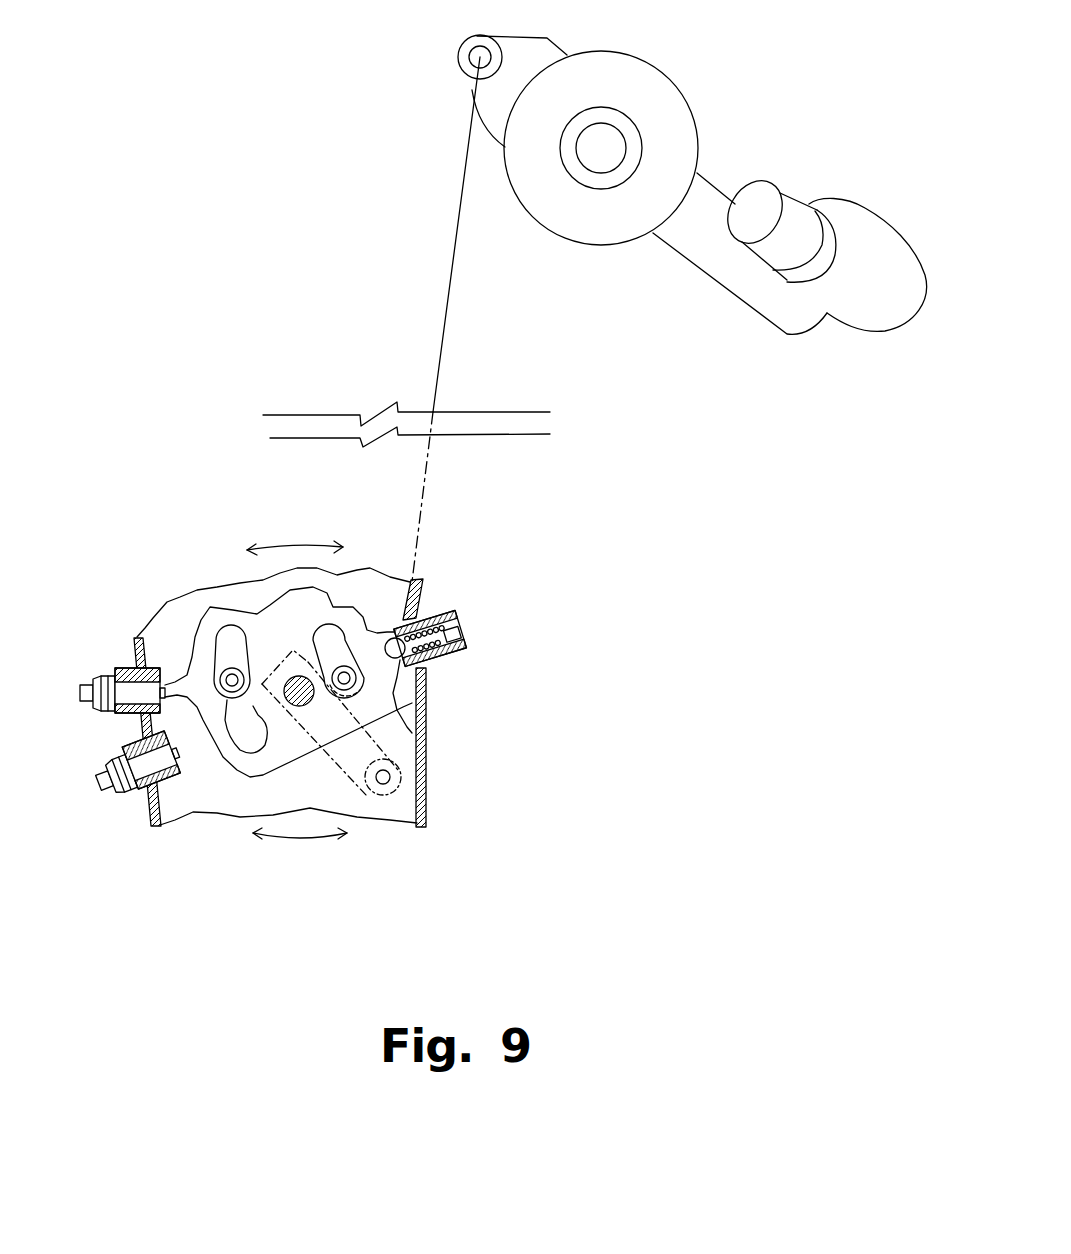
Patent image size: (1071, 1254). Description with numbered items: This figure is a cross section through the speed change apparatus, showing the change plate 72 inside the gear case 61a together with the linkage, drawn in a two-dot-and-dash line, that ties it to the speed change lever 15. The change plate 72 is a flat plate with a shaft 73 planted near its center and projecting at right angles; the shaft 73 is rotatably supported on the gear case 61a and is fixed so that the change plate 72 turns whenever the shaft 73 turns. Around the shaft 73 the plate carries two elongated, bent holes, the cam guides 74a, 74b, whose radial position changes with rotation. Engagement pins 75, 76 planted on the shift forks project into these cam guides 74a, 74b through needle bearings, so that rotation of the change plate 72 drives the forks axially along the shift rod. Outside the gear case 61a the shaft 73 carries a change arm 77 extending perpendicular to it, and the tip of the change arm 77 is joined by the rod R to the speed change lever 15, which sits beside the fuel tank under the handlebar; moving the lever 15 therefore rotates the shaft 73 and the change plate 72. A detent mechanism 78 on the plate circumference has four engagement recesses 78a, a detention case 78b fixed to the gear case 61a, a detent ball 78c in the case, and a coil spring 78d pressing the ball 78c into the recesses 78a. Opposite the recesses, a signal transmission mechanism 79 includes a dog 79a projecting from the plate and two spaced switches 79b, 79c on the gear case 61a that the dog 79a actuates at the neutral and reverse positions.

The speed change lever 15 is at (707, 210).
The rod R is at (457, 232).
The gear case 61a is at (427, 728).
The change plate 72 is at (330, 640).
The shaft 73 is at (263, 687).
The cam guide 74a is at (273, 623).
The cam guide 74b is at (250, 735).
The engagement pin 75 is at (427, 728).
The engagement pin 76 is at (286, 692).
The change arm 77 is at (360, 763).
The detent mechanism 78 is at (543, 686).
The engagement recesses 78a is at (427, 698).
The detention case 78b is at (457, 628).
The detent ball 78c is at (400, 696).
The coil spring 78d is at (443, 648).
The signal transmission mechanism 79 is at (136, 827).
The dog 79a is at (160, 826).
The switch 79b is at (80, 697).
The switch 79c is at (97, 787).